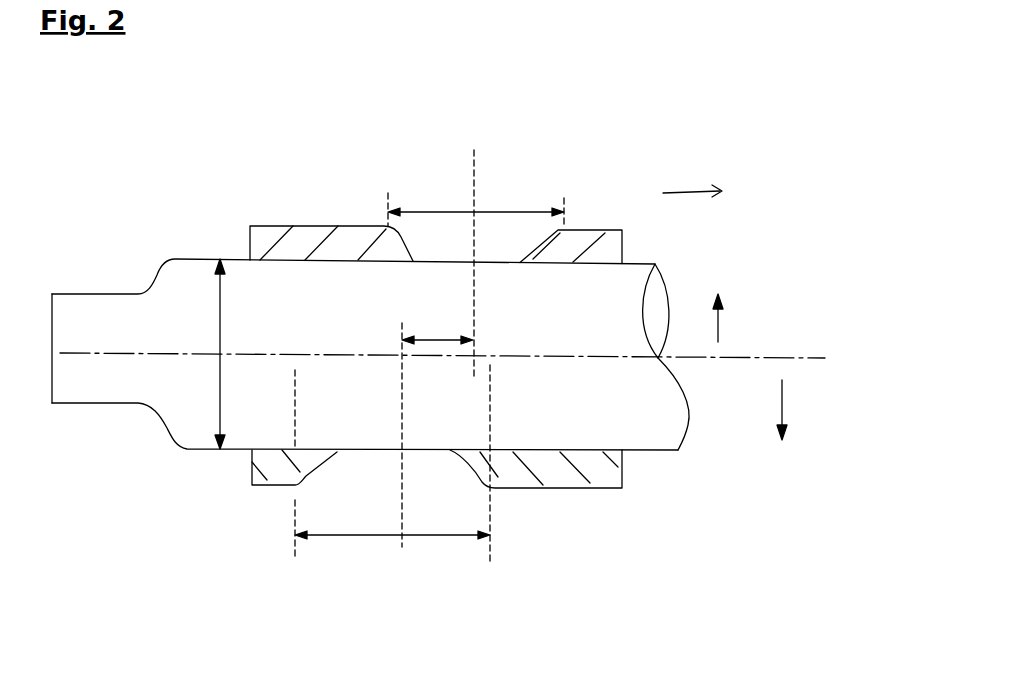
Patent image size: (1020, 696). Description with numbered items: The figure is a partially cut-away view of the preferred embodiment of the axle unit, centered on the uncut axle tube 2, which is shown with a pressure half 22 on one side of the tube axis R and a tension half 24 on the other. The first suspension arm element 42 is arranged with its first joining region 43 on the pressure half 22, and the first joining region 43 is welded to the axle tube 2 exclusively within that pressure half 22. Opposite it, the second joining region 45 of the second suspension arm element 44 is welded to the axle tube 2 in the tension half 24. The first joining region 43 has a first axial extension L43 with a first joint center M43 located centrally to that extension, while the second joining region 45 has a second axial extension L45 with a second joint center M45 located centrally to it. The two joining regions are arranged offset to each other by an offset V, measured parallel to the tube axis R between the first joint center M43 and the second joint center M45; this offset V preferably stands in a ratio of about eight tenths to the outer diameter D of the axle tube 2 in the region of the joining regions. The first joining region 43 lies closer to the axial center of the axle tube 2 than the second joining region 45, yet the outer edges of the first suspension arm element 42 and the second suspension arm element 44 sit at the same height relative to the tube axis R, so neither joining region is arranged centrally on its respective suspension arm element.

The axle tube 2 is at (673, 437).
The pressure half 22 is at (722, 318).
The tension half 24 is at (787, 412).
The first suspension arm element 42 is at (280, 228).
The first joining region 43 is at (412, 262).
The second suspension arm element 44 is at (275, 473).
The second joining region 45 is at (457, 455).
The outer diameter D is at (218, 307).
The offset V is at (435, 340).
The tube axis R is at (708, 358).
The first joint center M43 is at (474, 237).
The first axial extension L43 is at (532, 208).
The second joint center M45 is at (403, 512).
The second axial extension L45 is at (345, 537).